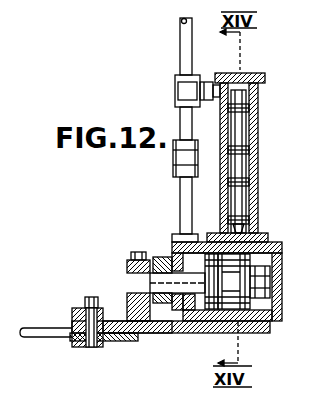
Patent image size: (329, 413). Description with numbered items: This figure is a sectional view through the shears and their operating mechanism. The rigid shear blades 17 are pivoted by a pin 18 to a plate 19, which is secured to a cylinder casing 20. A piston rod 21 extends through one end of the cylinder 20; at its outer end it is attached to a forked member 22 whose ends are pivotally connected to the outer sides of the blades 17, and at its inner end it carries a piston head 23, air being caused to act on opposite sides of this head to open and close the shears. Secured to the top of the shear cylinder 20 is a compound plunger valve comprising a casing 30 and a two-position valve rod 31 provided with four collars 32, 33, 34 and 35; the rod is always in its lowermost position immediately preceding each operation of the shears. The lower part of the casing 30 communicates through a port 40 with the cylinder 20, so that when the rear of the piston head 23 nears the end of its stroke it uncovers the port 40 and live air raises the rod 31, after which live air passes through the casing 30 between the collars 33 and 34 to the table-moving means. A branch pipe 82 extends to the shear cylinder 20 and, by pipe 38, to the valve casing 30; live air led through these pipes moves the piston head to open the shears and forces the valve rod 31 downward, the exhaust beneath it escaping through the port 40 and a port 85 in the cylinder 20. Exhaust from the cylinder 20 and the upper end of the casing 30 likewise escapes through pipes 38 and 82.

The shears 17 is at (32, 338).
The pin 18 is at (88, 312).
The plate 19 is at (258, 328).
The cylinder casing 20 is at (282, 295).
The piston rod 21 is at (196, 294).
The forked member 22 is at (120, 310).
The piston head 23 is at (282, 265).
The casing 30 is at (264, 81).
The valve rod 31 is at (240, 97).
The collar 32 is at (250, 114).
The collar 33 is at (250, 150).
The collar 34 is at (250, 181).
The collar 35 is at (252, 221).
The pipe 38 is at (211, 82).
The port 40 is at (282, 247).
The pipe 82 is at (180, 38).
The port 85 is at (221, 321).